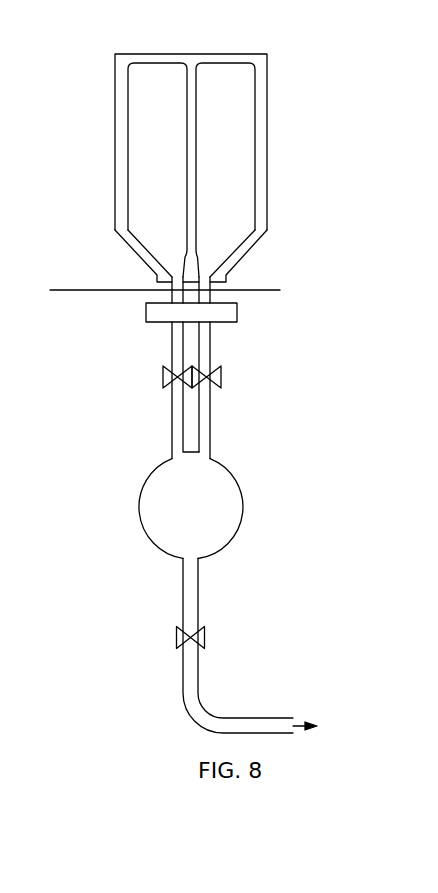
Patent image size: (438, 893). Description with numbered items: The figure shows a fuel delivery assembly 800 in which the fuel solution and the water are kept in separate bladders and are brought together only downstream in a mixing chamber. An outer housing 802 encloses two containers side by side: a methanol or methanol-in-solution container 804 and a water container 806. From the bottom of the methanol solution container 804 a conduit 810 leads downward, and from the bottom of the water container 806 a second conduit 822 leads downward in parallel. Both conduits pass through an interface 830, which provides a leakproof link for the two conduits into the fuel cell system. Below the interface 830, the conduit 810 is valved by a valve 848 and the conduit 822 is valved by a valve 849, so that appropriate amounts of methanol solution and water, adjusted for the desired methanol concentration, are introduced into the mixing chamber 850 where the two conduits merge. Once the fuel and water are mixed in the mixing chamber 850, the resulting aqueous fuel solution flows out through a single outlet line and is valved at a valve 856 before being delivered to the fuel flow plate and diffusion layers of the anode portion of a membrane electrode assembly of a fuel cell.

The fuel delivery assembly 800 is at (402, 72).
The outer housing 802 is at (247, 253).
The methanol solution container 804 is at (137, 155).
The water container 806 is at (245, 141).
The conduit 810 is at (162, 273).
The conduit 822 is at (230, 272).
The interface 830 is at (146, 312).
The valve 848 is at (163, 377).
The valve 849 is at (221, 377).
The mixing chamber 850 is at (139, 503).
The valve 856 is at (208, 637).